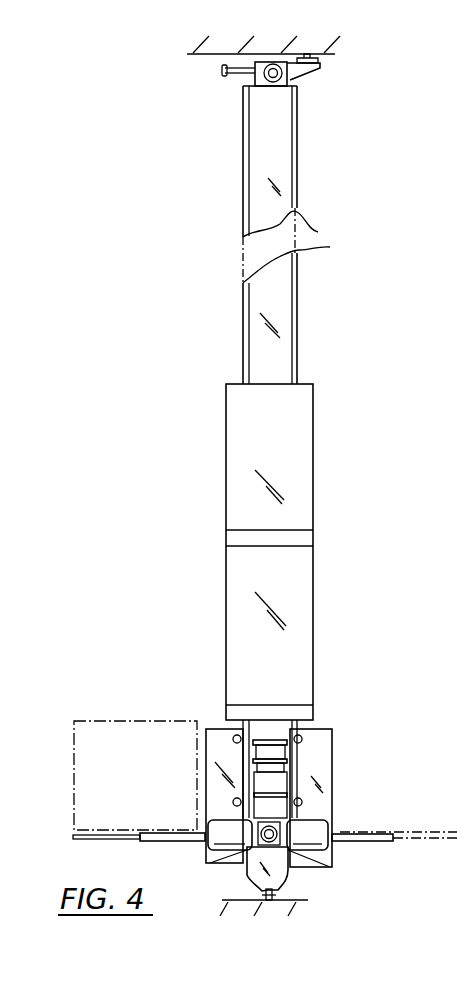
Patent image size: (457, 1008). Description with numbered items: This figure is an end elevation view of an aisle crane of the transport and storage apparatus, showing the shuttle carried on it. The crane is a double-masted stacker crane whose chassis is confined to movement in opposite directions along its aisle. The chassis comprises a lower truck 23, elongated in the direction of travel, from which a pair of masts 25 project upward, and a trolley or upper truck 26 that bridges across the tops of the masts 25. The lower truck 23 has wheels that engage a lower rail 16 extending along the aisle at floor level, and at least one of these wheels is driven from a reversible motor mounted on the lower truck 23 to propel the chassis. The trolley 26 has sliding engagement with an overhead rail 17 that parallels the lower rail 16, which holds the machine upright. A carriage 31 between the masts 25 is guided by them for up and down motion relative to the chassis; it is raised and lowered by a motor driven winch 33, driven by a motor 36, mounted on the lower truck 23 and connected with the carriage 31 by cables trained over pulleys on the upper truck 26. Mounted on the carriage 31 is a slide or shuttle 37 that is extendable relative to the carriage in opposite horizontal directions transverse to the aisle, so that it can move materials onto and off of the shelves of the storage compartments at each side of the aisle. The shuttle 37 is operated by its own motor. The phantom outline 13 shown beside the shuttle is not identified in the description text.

The display cabinet (phantom) 13 is at (88, 720).
The lower rail 16 is at (264, 899).
The overhead rail 17 is at (321, 54).
The lower truck 23 is at (289, 884).
The masts 25 is at (288, 452).
The trolley or upper truck 26 is at (248, 83).
The carriage 31 is at (334, 821).
The motor driven winch 33 is at (317, 817).
The motor 36 is at (283, 782).
The slide or shuttle 37 is at (165, 843).